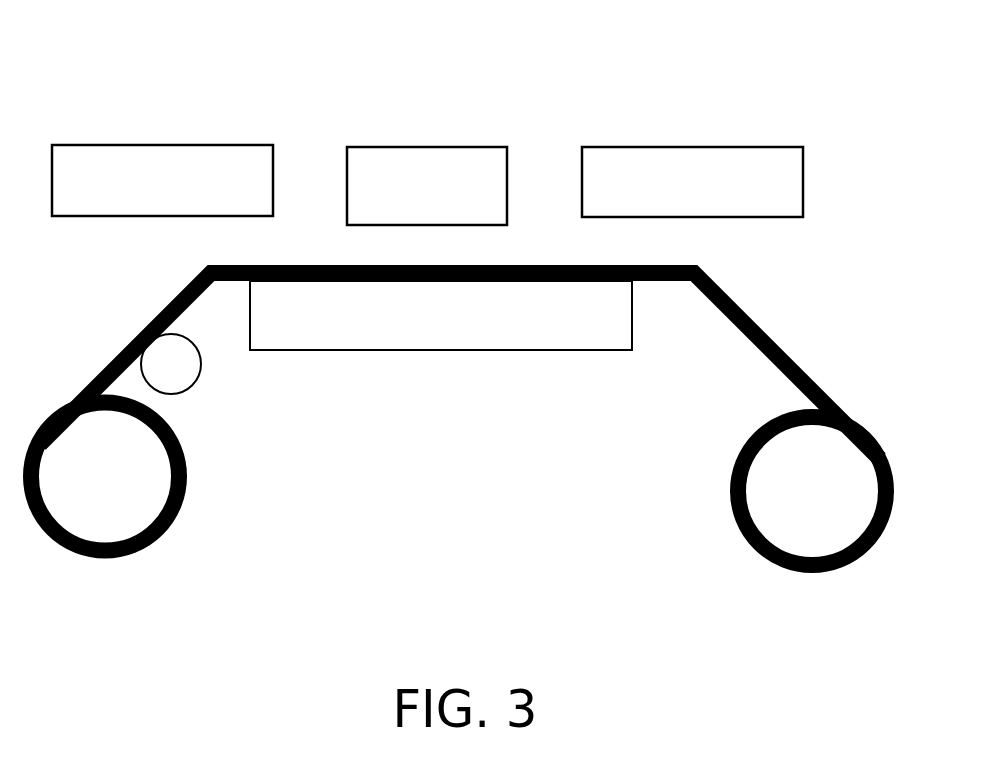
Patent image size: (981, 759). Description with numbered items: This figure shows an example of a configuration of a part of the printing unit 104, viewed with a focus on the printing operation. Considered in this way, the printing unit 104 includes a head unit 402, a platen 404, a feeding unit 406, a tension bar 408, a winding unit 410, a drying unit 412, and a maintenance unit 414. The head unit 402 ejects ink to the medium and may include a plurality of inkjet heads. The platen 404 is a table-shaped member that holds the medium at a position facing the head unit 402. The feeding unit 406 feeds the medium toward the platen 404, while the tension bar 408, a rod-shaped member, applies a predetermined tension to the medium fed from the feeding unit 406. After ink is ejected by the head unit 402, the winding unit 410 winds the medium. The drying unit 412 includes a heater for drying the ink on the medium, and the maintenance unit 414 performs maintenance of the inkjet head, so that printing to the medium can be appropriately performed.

The printing unit 104 is at (922, 78).
The head unit 402 is at (405, 147).
The platen 404 is at (457, 350).
The feeding unit 406 is at (168, 532).
The tension bar 408 is at (185, 386).
The winding unit 410 is at (728, 484).
The drying unit 412 is at (666, 147).
The maintenance unit 414 is at (140, 145).